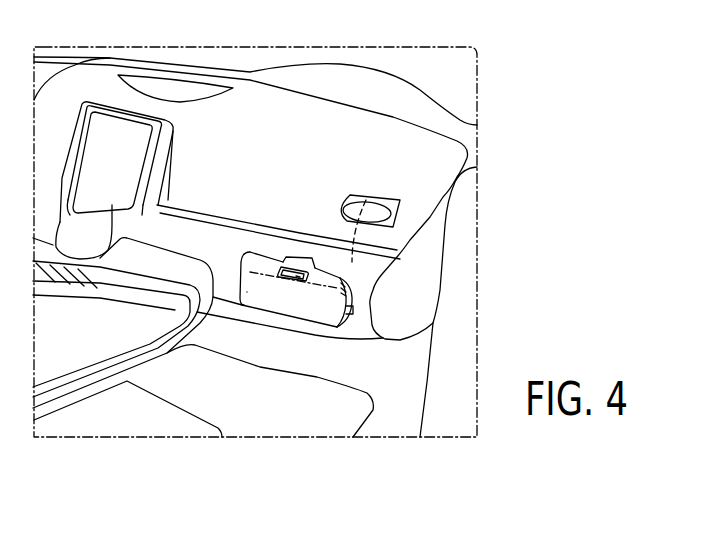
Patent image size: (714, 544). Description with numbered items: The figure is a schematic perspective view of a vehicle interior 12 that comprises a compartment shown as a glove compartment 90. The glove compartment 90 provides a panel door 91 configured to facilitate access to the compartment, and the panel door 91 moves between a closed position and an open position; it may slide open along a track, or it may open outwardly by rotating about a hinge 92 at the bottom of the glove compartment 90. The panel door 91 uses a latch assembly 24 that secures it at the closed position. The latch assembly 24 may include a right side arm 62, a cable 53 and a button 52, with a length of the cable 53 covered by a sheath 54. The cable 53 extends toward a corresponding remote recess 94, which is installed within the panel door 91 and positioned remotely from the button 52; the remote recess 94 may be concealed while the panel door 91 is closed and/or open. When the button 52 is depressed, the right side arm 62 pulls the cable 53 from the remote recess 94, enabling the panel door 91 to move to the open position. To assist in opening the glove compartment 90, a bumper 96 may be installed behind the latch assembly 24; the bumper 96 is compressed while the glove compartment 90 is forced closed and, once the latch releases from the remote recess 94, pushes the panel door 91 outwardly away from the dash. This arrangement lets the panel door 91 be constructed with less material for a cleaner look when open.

The vehicle interior 12 is at (288, 223).
The latch assembly 24 is at (302, 295).
The button 52 is at (363, 287).
The cable 53 is at (348, 289).
The sheath 54 is at (352, 302).
The right side arm 62 is at (363, 208).
The glove compartment 90 is at (288, 292).
The panel door 91 is at (255, 286).
The hinge 92 is at (247, 292).
The remote recess 94 is at (353, 312).
The bumper 96 is at (310, 262).